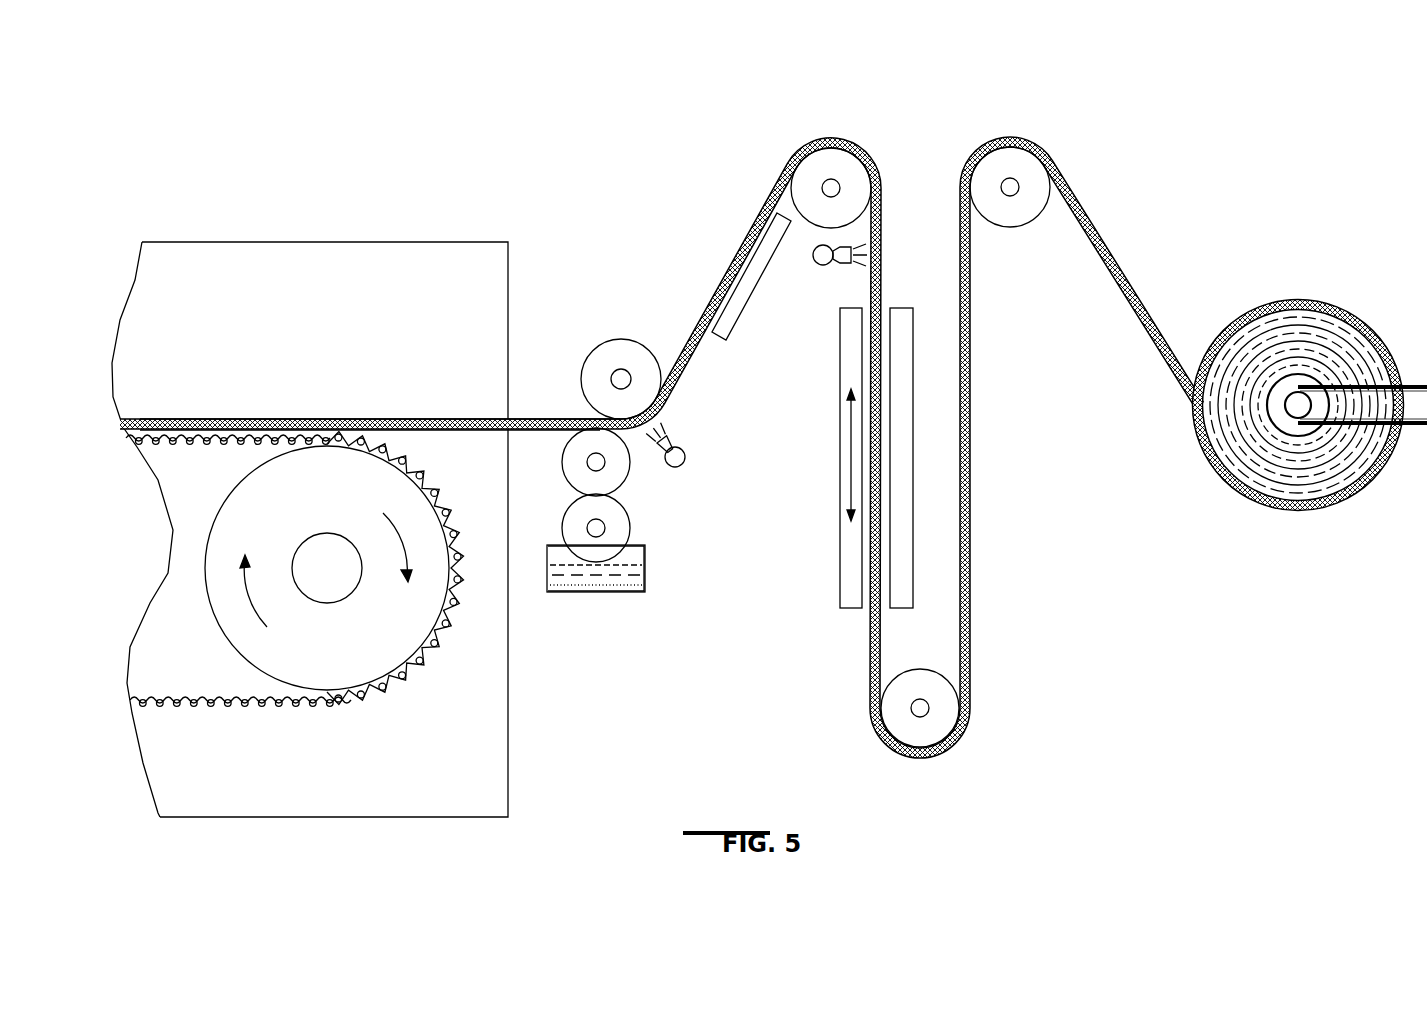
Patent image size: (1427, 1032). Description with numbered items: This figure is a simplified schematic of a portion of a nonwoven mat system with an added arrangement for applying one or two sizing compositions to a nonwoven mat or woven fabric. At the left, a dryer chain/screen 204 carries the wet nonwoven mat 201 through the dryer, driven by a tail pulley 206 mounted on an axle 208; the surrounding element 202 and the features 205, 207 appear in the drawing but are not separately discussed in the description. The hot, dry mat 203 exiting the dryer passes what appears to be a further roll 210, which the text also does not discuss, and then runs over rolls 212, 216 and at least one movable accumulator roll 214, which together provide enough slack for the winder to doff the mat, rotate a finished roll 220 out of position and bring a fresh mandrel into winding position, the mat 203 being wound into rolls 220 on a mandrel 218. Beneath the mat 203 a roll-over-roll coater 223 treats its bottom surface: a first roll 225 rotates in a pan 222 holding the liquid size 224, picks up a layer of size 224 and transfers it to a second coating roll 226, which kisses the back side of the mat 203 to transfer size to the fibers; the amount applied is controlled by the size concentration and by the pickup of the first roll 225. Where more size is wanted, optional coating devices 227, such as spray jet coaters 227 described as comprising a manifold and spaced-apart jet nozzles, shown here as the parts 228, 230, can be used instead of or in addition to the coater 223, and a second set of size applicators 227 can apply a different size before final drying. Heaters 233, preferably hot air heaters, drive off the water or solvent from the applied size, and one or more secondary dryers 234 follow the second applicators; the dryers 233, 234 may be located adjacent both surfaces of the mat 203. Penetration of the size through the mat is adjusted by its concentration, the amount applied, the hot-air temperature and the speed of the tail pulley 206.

The nonwoven mat 201 is at (417, 419).
The housing 202 is at (302, 242).
The hot, dry mat 203 is at (532, 418).
The dryer chain/screen 204 is at (248, 707).
The belt underside 205 is at (553, 430).
The tail pulley 206 is at (378, 630).
The upper belt layer 207 is at (508, 411).
The axle 208 is at (322, 555).
The roller 210 is at (613, 358).
The roll 212 is at (838, 165).
The movable accumulator roll 214 is at (928, 730).
The roll 216 is at (1005, 163).
The mandrel 218 is at (1273, 412).
The roll 220 is at (1275, 325).
The pan 222 is at (656, 579).
The roll over roll coater 223 is at (647, 553).
The liquid size 224 is at (592, 580).
The first roll 225 is at (613, 540).
The coating roll 226 is at (612, 468).
The spray jet coater 227 is at (696, 458).
The nozzle body 228 is at (682, 452).
The spray 230 is at (672, 438).
The heater 233 is at (738, 303).
The secondary dryer 234 is at (843, 575).